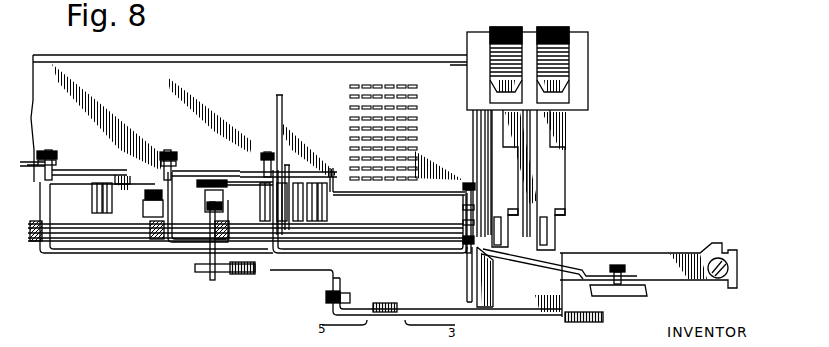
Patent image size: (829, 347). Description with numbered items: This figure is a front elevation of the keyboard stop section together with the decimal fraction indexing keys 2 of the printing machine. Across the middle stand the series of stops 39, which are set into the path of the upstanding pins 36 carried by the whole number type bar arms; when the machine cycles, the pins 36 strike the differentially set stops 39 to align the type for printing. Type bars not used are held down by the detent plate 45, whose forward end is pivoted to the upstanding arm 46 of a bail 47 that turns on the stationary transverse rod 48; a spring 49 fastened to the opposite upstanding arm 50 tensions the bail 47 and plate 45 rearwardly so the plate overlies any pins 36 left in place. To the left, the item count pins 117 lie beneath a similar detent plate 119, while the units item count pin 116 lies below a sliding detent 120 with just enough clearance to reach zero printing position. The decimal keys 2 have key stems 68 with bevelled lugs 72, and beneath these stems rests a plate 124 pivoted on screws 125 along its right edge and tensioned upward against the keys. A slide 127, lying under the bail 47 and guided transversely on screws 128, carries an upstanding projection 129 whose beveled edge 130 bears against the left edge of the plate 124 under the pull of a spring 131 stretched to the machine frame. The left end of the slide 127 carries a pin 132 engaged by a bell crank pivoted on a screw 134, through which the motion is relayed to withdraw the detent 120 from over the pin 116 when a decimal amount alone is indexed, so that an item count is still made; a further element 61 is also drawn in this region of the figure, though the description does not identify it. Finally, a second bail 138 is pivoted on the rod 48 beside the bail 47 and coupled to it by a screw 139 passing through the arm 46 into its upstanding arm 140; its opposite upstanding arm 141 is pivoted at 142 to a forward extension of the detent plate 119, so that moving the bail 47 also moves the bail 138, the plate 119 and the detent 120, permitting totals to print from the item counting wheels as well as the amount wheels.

The decimal keys 2 is at (578, 22).
The upstanding pins 36 is at (325, 210).
The stops 39 is at (412, 85).
The detent plate 45 is at (325, 167).
The upstanding arm 46 is at (283, 130).
The bail 47 is at (412, 255).
The stationary transverse rod 48 is at (389, 232).
The spring 49 is at (462, 180).
The upstanding arm 50 is at (464, 204).
The rod 61 is at (466, 283).
The keys 68 is at (557, 138).
The lugs 72 is at (558, 207).
The upstanding pin 116 is at (227, 170).
The upstanding pins 117 is at (92, 206).
The detent plate 119 is at (125, 153).
The detent 120 is at (200, 186).
The plate 124 is at (557, 257).
The screws 125 is at (622, 264).
The slide 127 is at (342, 273).
The screws 128 is at (397, 307).
The upstanding projection 129 is at (487, 308).
The beveled edge 130 is at (493, 263).
The spring 131 is at (606, 316).
The pin 132 is at (249, 278).
The screw 134 is at (260, 268).
The bail 138 is at (180, 253).
The screw 139 is at (290, 177).
The upstanding arm 140 is at (254, 168).
The upstanding arm 141 is at (50, 156).
The pivot 142 is at (60, 133).